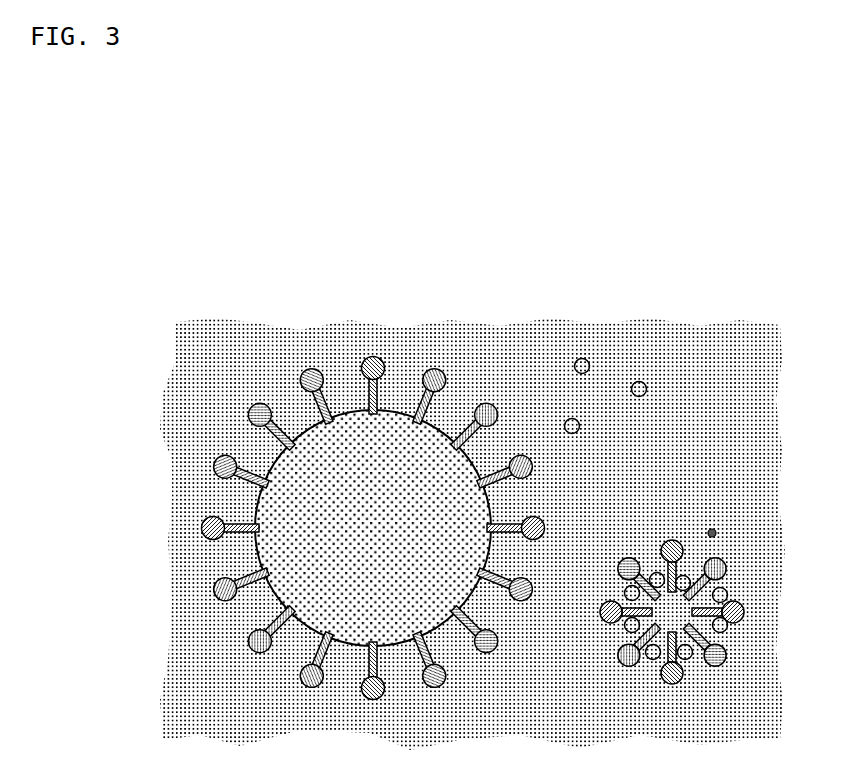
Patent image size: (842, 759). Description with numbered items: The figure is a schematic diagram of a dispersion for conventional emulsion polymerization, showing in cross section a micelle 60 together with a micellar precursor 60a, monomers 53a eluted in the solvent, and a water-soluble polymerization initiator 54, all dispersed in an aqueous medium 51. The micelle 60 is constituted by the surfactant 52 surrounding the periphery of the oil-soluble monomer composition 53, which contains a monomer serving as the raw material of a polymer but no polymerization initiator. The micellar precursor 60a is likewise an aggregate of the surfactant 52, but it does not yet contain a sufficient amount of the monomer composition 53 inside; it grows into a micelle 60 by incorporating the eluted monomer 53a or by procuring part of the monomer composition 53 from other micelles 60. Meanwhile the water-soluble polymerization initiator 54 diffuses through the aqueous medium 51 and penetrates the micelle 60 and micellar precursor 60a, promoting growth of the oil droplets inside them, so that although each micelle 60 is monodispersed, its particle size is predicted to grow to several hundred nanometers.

The aqueous medium 51 is at (223, 340).
The surfactant 52 is at (300, 430).
The monomer composition 53 is at (345, 430).
The monomer 53a is at (582, 358).
The water-soluble polymerization initiator 54 is at (712, 528).
The micelle 60 is at (482, 479).
The micellar precursor 60a is at (742, 548).